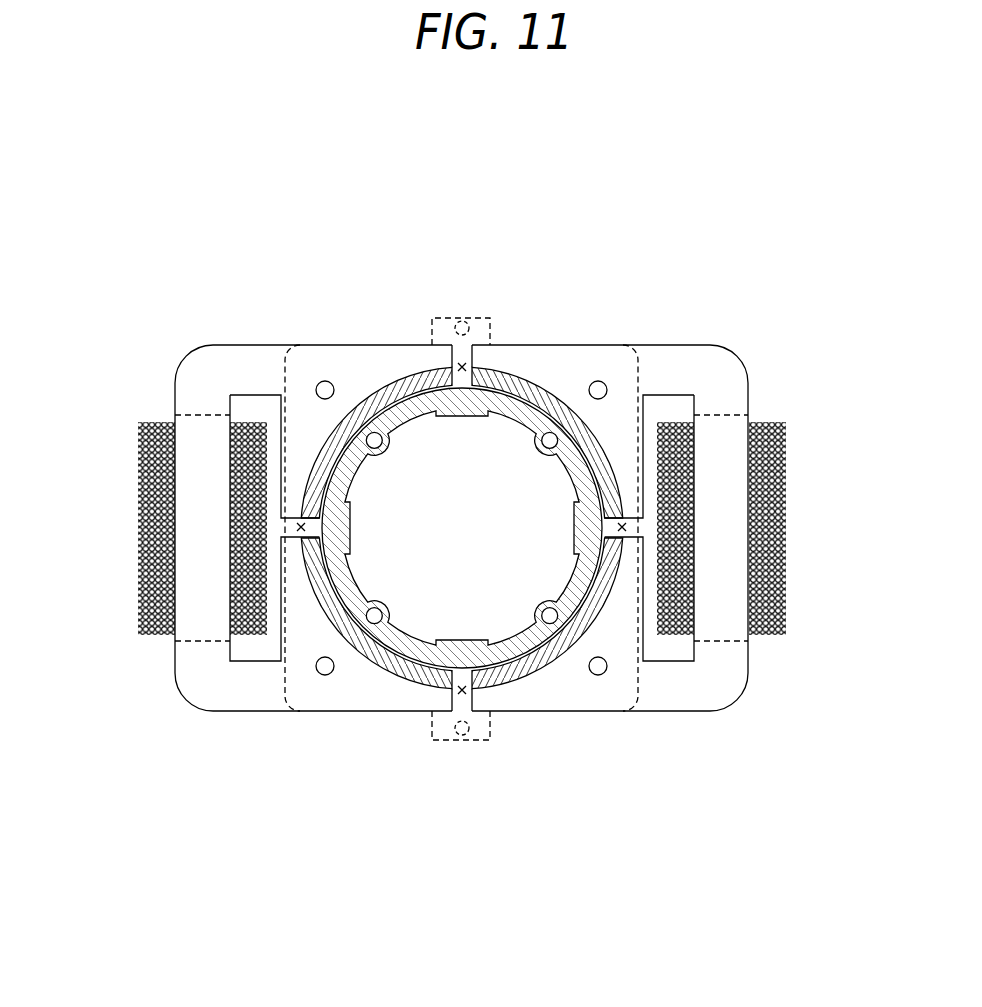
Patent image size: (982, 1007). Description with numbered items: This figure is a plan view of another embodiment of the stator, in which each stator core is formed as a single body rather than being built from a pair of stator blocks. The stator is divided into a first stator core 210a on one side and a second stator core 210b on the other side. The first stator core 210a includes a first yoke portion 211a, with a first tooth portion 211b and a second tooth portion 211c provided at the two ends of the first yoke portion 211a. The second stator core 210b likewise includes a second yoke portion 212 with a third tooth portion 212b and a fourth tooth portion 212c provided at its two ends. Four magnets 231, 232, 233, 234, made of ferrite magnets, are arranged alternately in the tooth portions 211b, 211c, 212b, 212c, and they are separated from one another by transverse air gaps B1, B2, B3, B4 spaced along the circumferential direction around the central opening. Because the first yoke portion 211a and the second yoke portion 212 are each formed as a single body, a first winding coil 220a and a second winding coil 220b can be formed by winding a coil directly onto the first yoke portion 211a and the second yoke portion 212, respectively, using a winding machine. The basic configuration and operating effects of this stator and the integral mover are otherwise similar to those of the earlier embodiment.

The first stator core 210a is at (270, 529).
The second stator core 210b is at (654, 529).
The first yoke portion 211a is at (202, 380).
The first tooth portion 211b is at (355, 368).
The second tooth portion 211c is at (355, 690).
The second housing body 212 is at (728, 377).
The fourth tooth portion 212c is at (568, 368).
The third tooth portion 212b is at (567, 690).
The first winding coil 220a is at (137, 541).
The second winding coil 220b is at (780, 541).
The magnet 231 is at (411, 378).
The magnet 232 is at (410, 678).
The magnet 233 is at (512, 678).
The magnet 234 is at (511, 378).
The transverse air gap B1 is at (302, 521).
The transverse air gap B2 is at (460, 695).
The transverse air gap B3 is at (621, 521).
The transverse air gap B4 is at (460, 362).